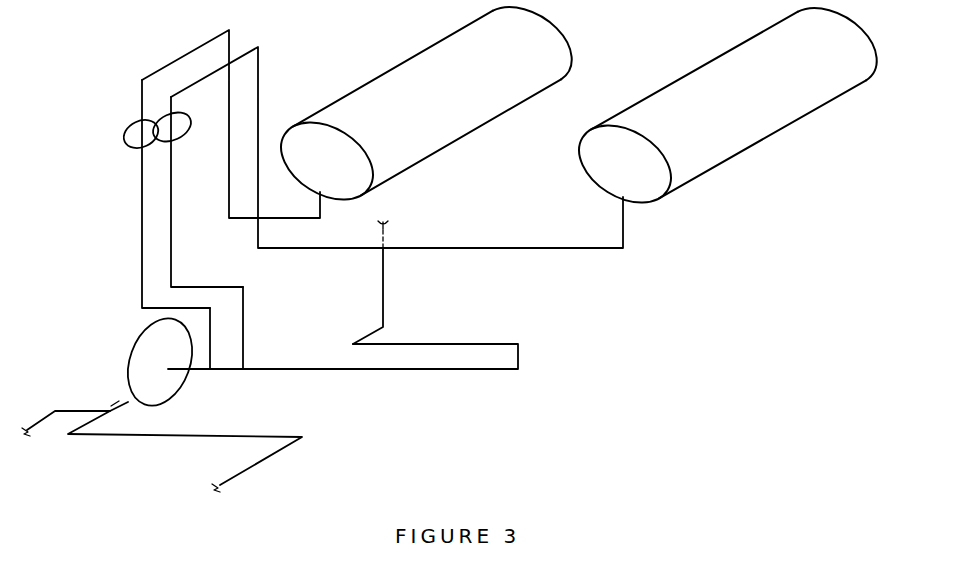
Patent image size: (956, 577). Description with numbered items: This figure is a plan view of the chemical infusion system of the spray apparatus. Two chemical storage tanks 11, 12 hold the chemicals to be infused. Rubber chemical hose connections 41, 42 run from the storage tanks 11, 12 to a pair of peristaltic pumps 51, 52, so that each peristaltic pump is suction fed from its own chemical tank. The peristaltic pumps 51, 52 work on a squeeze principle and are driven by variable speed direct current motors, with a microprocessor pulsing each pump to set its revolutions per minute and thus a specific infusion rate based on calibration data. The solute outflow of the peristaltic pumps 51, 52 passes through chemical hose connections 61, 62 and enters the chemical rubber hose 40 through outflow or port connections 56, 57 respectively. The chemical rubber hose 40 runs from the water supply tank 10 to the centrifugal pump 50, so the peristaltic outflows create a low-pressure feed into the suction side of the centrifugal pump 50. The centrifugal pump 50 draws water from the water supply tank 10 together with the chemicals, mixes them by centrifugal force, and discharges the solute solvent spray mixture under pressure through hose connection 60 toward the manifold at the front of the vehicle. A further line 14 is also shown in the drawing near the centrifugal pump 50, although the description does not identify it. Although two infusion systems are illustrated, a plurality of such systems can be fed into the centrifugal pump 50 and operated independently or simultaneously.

The water supply tank 10 is at (371, 271).
The chemical storage tank 11 is at (553, 27).
The chemical storage tank 12 is at (851, 26).
The lead line 14 is at (28, 427).
The chemical rubber hose 40 is at (506, 371).
The rubber chemical hose connection 41 is at (229, 30).
The rubber chemical hose connection 42 is at (258, 47).
The centrifugal pump 50 is at (140, 346).
The peristaltic pump 51 is at (125, 138).
The peristaltic pump 52 is at (155, 140).
The outflow connection 56 is at (209, 370).
The outflow connection 57 is at (242, 370).
The hose connection 60 is at (230, 438).
The chemical hose connection 61 is at (142, 196).
The chemical hose connection 62 is at (170, 203).